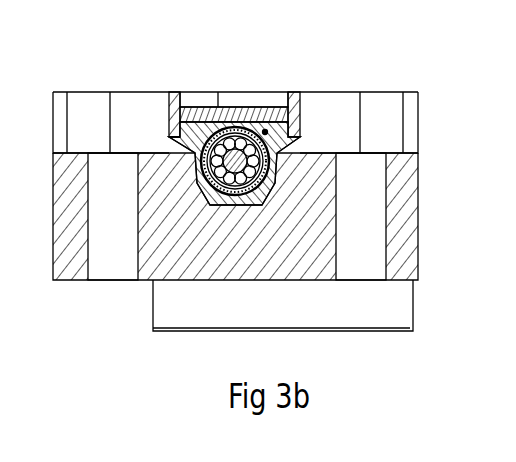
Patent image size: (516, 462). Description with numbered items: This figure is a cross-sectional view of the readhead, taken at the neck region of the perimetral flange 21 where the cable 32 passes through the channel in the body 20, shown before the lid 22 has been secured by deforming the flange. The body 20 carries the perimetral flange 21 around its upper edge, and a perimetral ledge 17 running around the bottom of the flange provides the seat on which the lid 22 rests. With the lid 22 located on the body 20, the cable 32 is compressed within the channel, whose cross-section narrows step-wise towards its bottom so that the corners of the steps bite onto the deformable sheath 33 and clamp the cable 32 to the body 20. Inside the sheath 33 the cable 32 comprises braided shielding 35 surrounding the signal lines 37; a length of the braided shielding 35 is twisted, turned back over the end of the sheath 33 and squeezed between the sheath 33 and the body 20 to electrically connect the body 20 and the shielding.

The perimetral ledge 17 is at (187, 134).
The body 20 is at (61, 227).
The perimetral flange 21 is at (174, 94).
The lid 22 is at (198, 110).
The cable 32 is at (193, 153).
The sheath 33 is at (265, 132).
The braided shielding 35 is at (281, 194).
The signal lines 37 is at (262, 186).